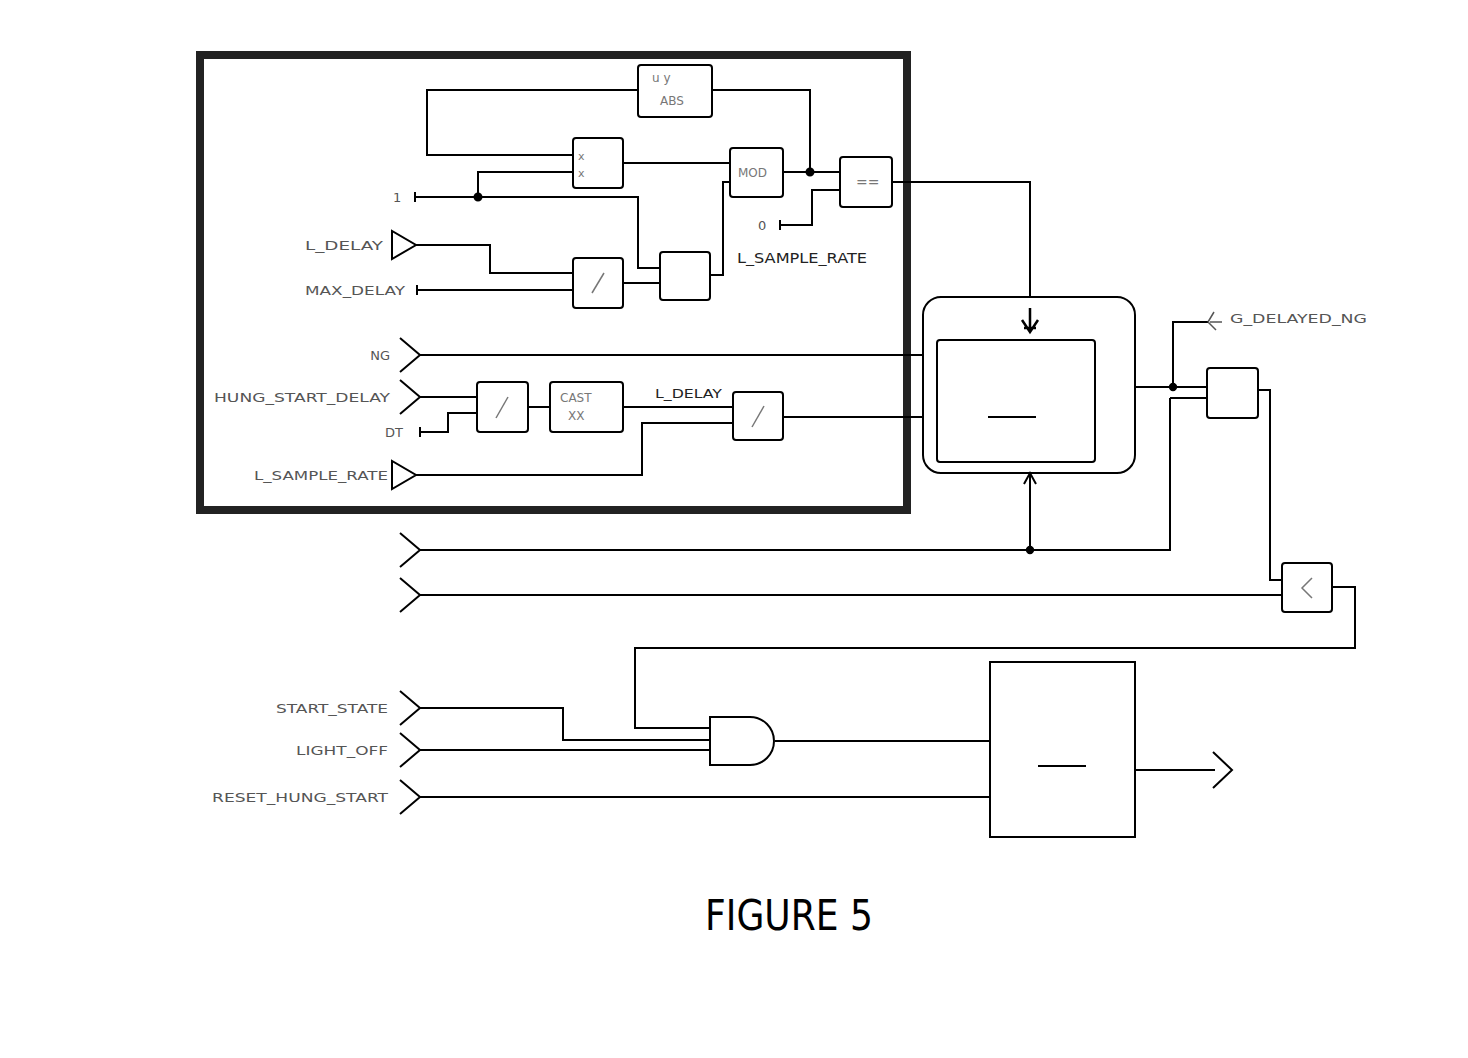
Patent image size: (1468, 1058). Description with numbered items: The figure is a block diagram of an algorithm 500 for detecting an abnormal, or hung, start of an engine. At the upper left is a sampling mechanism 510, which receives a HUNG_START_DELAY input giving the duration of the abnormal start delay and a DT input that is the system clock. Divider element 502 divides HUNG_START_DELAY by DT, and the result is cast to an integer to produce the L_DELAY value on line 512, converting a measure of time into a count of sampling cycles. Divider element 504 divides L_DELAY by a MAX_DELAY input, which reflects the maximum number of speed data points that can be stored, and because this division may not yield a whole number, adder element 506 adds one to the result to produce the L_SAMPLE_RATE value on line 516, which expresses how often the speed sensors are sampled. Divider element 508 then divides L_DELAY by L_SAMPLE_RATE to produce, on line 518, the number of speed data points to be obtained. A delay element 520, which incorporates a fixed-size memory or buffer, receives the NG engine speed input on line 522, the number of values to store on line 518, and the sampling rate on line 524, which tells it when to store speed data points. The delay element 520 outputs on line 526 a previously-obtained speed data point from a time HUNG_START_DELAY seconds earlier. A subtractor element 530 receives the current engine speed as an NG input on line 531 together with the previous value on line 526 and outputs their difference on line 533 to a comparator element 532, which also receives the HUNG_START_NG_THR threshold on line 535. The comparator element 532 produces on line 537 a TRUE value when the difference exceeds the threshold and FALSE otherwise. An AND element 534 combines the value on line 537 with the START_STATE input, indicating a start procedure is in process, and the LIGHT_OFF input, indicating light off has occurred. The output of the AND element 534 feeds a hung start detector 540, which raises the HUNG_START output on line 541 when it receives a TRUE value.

The algorithm 500 is at (1213, 126).
The sampling mechanism 510 is at (198, 130).
The divider element 502 is at (522, 432).
The divider element 504 is at (612, 310).
The adder element 506 is at (706, 302).
The divider element 508 is at (782, 440).
The line 512 is at (638, 405).
The line 516 is at (722, 204).
The line 518 is at (866, 415).
The delay element 520 is at (1029, 385).
The line 522 is at (866, 354).
The line 524 is at (1030, 253).
The line 526 is at (1153, 383).
The subtractor element 530 is at (1258, 375).
The line 531 is at (955, 548).
The comparator element 532 is at (1322, 563).
The line 533 is at (1270, 465).
The line 535 is at (1188, 595).
The line 537 is at (1358, 620).
The AND element 534 is at (752, 715).
The hung start detector 540 is at (1062, 749).
The line 541 is at (1165, 770).